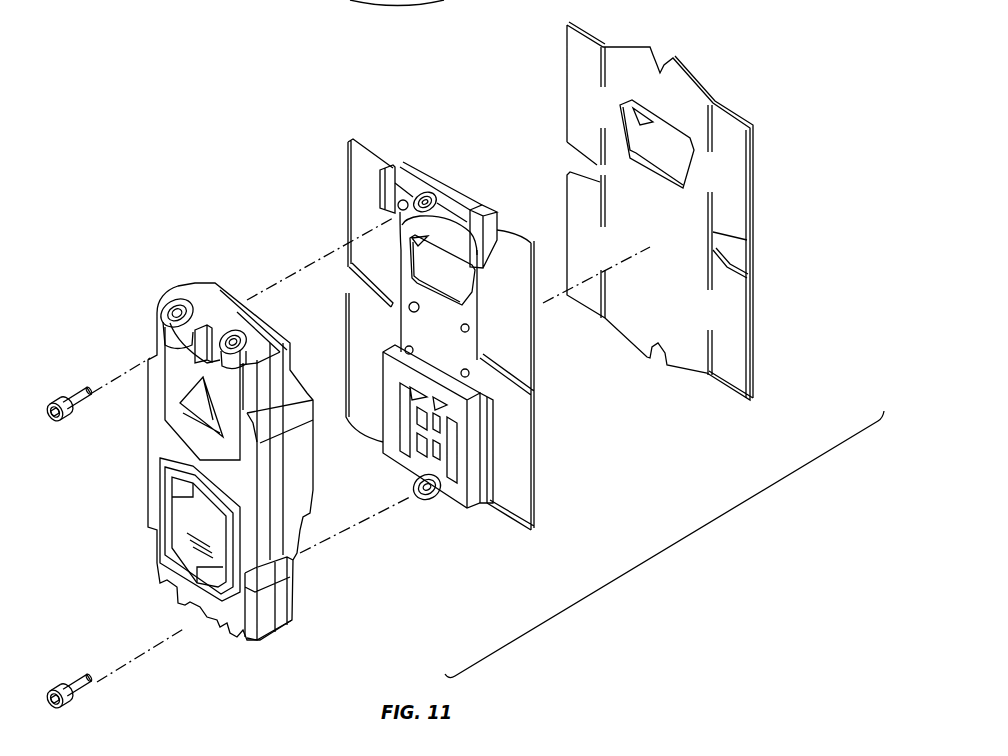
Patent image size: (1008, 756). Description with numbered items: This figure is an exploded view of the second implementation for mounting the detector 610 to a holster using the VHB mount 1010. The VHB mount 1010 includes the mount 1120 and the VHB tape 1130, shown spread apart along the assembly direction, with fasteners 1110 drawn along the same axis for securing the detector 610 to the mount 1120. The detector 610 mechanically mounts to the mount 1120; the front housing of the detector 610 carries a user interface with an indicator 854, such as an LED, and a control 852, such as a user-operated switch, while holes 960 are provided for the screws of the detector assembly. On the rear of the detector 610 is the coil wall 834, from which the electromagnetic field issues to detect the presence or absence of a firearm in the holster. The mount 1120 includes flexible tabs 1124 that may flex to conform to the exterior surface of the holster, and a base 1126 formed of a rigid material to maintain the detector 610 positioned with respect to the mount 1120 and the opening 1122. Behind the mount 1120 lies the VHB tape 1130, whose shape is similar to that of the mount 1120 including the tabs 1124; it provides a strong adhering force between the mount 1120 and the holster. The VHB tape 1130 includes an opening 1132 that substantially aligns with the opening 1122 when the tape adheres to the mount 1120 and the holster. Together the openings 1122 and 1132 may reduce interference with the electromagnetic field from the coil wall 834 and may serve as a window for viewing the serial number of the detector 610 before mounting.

The detector 610 is at (148, 477).
The coil wall 834 is at (313, 493).
The control 852 is at (160, 523).
The indicator 854 is at (157, 337).
The holes 960 is at (205, 320).
The VHB mount 1010 is at (664, 544).
The fastener 1110 is at (67, 400).
The mount 1120 is at (533, 468).
The opening 1122 is at (408, 185).
The flexible tabs 1124 is at (357, 145).
The base 1126 is at (467, 193).
The VHB tape 1130 is at (750, 320).
The opening 1132 is at (634, 108).